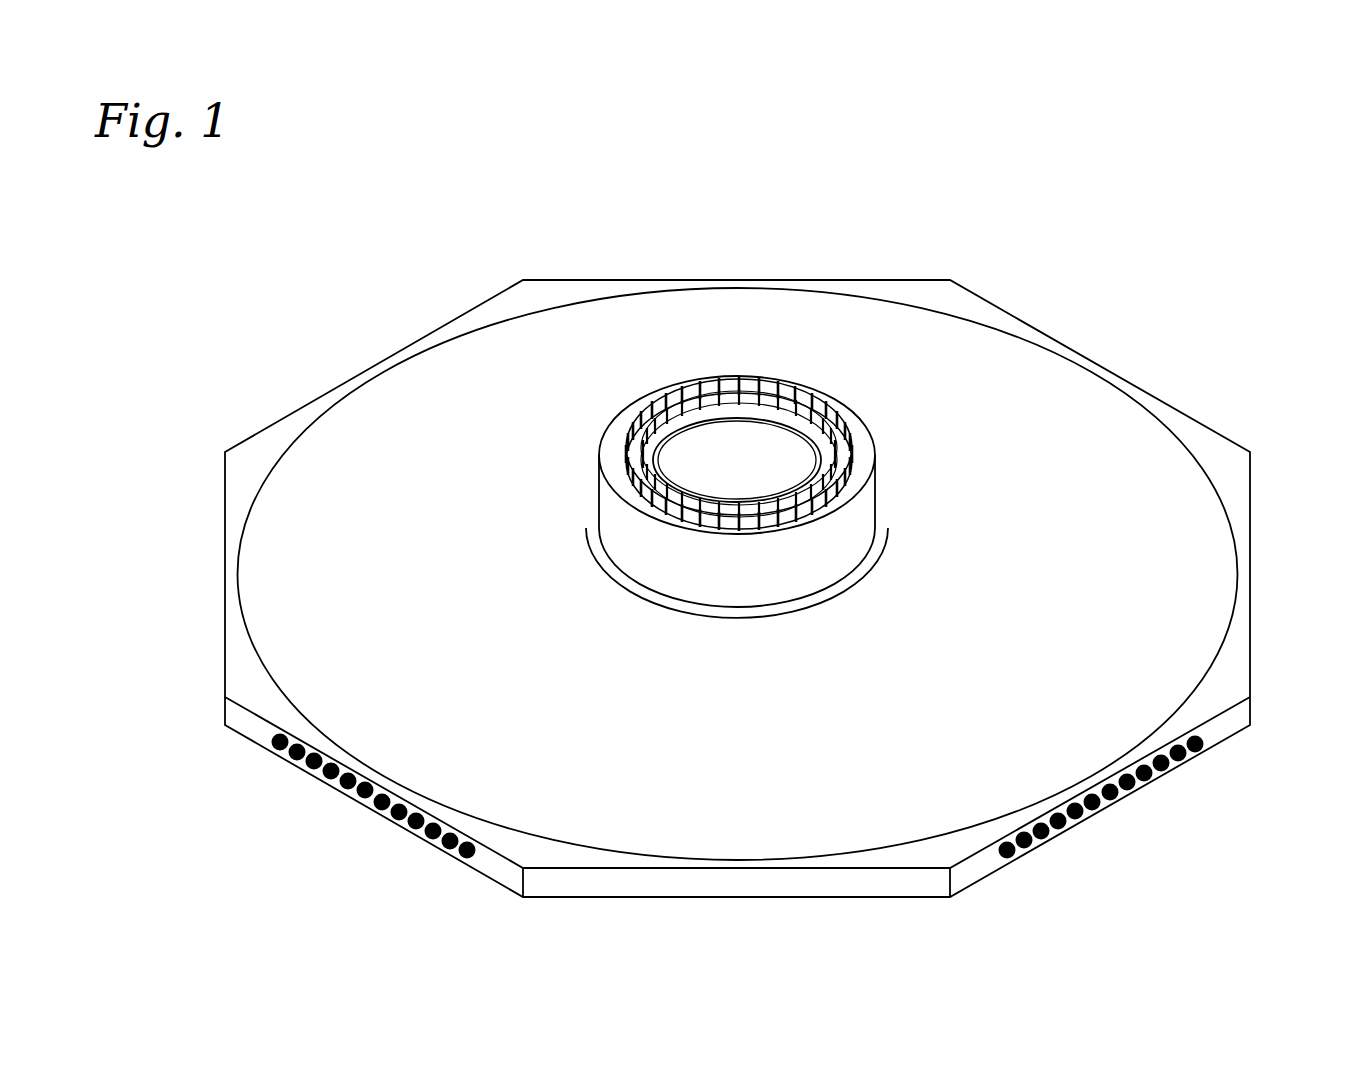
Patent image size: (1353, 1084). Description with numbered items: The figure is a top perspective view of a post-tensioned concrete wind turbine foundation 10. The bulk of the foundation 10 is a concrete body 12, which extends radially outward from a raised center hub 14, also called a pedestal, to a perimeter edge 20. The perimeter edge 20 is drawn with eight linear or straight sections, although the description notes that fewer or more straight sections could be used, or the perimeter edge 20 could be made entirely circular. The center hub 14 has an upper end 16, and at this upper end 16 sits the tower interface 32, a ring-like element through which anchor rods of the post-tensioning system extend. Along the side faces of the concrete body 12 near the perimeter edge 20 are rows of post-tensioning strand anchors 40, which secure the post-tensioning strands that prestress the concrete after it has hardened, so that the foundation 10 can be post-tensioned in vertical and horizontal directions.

The foundation 10 is at (1188, 256).
The concrete body 12 is at (393, 423).
The center hub 14 is at (850, 537).
The upper end 16 is at (860, 445).
The perimeter edge 20 is at (223, 517).
The tower interface 32 is at (640, 488).
The post-tensioning strand anchors 40 is at (317, 772).